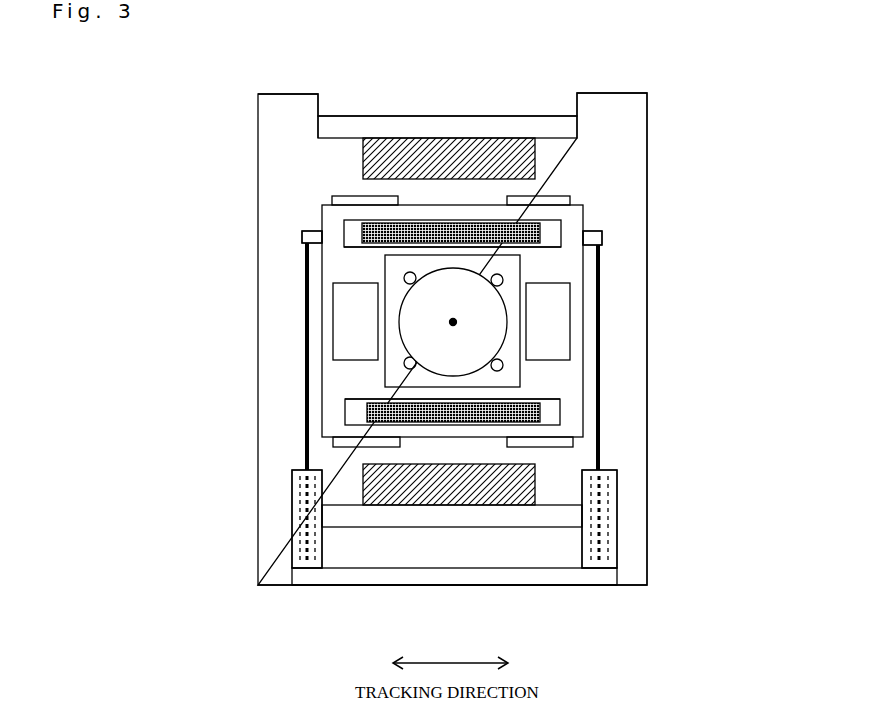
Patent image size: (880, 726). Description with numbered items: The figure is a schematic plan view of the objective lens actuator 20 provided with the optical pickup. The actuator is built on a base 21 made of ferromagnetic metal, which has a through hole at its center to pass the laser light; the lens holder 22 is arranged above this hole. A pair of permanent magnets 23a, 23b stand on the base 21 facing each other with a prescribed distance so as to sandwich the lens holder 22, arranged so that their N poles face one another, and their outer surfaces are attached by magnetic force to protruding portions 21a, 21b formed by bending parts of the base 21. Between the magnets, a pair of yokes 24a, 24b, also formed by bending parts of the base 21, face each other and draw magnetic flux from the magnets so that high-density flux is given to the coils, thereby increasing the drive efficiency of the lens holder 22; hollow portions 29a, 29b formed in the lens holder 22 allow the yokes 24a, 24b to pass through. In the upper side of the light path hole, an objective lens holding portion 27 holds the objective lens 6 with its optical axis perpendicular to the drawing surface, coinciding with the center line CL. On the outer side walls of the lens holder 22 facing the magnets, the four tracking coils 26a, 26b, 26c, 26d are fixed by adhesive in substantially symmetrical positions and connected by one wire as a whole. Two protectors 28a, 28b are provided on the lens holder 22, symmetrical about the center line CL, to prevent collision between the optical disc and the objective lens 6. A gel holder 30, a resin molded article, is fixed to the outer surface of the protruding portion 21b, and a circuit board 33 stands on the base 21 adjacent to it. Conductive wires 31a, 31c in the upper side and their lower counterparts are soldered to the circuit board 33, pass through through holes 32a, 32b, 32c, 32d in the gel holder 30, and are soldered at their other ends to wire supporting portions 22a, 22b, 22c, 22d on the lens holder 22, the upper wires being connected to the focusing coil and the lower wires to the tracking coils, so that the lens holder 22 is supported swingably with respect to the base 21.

The objective lens actuator 20 is at (695, 70).
The base 21 is at (276, 170).
The protruding portion 21a is at (472, 128).
The protruding portion 21b is at (470, 508).
The lens holder 22 is at (575, 222).
The wire supporting portion 22a is at (303, 237).
The wire supporting portion 22b is at (312, 237).
The wire supporting portion 22c is at (602, 237).
The wire supporting portion 22d is at (592, 238).
The permanent magnet 23a is at (408, 148).
The permanent magnet 23b is at (408, 500).
The yoke 24a is at (340, 217).
The yoke 24b is at (540, 413).
The tracking coil 26a is at (350, 195).
The tracking coil 26b is at (560, 195).
The tracking coil 26c is at (370, 446).
The tracking coil 26d is at (537, 448).
The objective lens holding portion 27 is at (520, 270).
The protector 28a is at (345, 297).
The protector 28b is at (558, 300).
The hollow portion 29a is at (358, 243).
The hollow portion 29b is at (359, 406).
The objective lens 6 is at (472, 358).
The gel holder 30 is at (548, 573).
The wire 31a is at (305, 352).
The wire 31c is at (600, 333).
The through hole 32a is at (298, 518).
The through hole 32b is at (307, 519).
The through hole 32c is at (607, 513).
The through hole 32d is at (599, 519).
The circuit board 33 is at (498, 577).